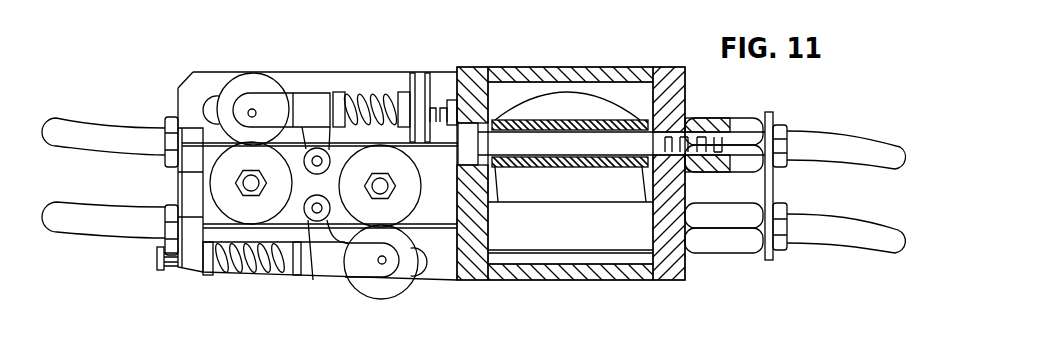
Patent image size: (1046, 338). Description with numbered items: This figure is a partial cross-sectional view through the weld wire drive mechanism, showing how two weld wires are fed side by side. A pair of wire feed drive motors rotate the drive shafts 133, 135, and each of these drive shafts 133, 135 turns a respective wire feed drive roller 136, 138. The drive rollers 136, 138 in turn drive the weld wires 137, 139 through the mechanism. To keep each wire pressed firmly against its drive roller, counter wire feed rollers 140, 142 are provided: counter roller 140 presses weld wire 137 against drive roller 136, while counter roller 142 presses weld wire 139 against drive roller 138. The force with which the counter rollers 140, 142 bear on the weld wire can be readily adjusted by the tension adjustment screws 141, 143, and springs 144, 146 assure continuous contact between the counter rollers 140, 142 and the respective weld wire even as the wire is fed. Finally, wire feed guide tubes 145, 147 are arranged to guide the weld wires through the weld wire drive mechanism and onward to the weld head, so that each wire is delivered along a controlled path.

The drive shaft 133 is at (390, 188).
The drive shaft 135 is at (240, 177).
The wire feed drive roller 136 is at (392, 191).
The weld wire 137 is at (310, 262).
The wire feed drive roller 138 is at (246, 186).
The weld wire 139 is at (420, 133).
The counter wire feed roller 140 is at (400, 292).
The tension adjustment screw 141 is at (452, 99).
The counter wire feed roller 142 is at (236, 78).
The tension adjustment screw 143 is at (152, 258).
The spring 144 is at (265, 278).
The wire feed guide tube 145 is at (637, 147).
The spring 146 is at (341, 92).
The wire feed guide tube 147 is at (610, 240).